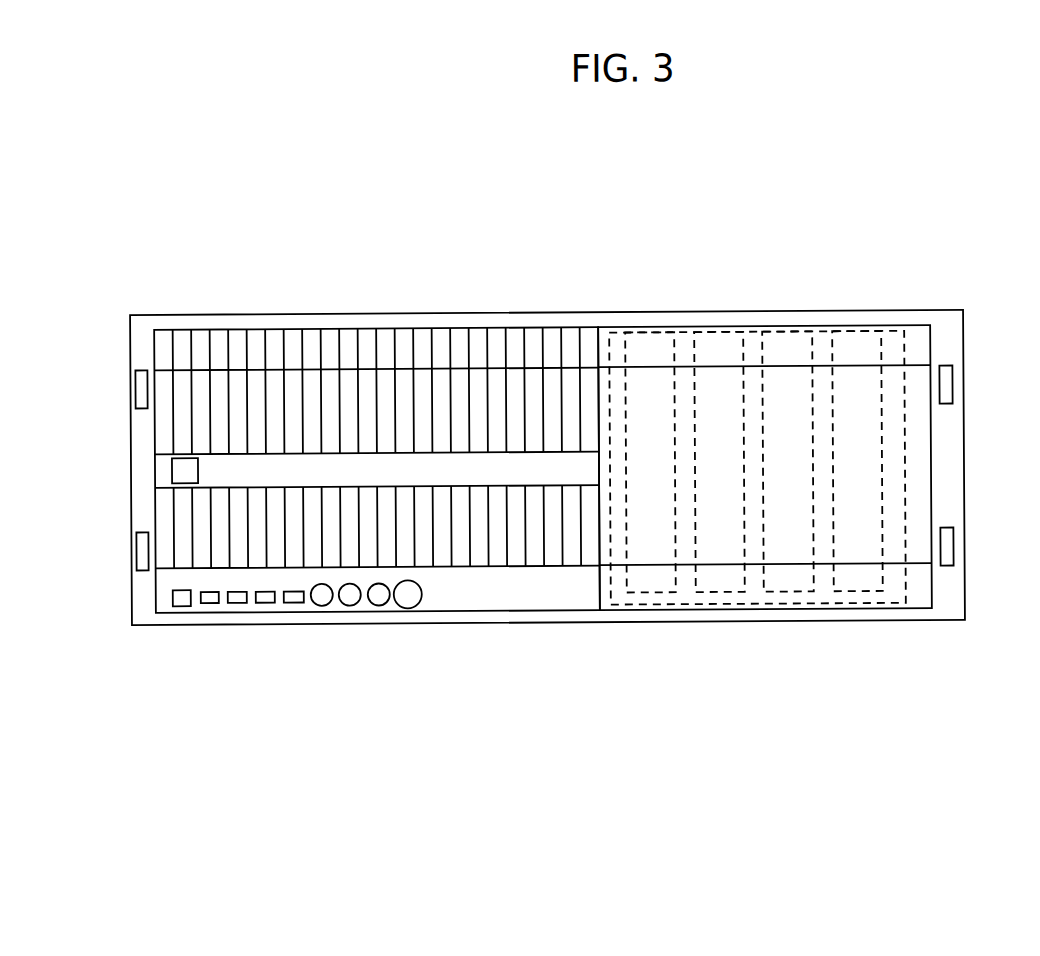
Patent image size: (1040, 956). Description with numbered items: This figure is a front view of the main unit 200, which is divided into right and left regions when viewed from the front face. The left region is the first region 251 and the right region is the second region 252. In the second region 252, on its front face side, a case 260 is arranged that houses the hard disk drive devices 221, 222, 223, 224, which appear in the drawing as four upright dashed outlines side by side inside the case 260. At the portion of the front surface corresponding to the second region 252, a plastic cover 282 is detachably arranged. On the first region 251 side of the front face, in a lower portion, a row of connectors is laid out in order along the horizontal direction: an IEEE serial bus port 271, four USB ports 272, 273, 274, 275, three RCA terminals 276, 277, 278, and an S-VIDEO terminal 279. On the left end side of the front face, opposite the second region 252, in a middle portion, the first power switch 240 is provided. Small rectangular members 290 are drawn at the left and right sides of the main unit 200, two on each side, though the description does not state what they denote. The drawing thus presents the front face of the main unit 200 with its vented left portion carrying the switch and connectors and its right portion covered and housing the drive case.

The main unit 200 is at (520, 244).
The first region 251 is at (366, 338).
The second region 252 is at (755, 346).
The case 260 is at (906, 354).
The plastic cover 282 is at (917, 475).
The mounting bracket 290 is at (144, 391).
The first power switch 240 is at (170, 465).
The IEEE 1394 port 271 is at (170, 595).
The USB port 272 is at (207, 602).
The USB port 273 is at (237, 602).
The USB port 274 is at (268, 602).
The USB port 275 is at (290, 602).
The RCA terminal 276 is at (328, 604).
The RCA terminal 277 is at (358, 604).
The RCA terminal 278 is at (387, 604).
The S-VIDEO terminal 279 is at (418, 606).
The hard disk drive device 221 is at (650, 596).
The hard disk drive device 222 is at (725, 596).
The hard disk drive device 223 is at (800, 596).
The hard disk drive device 224 is at (875, 596).